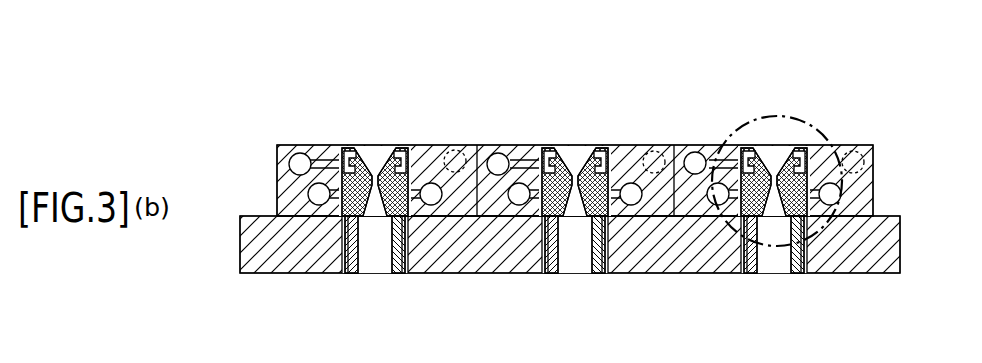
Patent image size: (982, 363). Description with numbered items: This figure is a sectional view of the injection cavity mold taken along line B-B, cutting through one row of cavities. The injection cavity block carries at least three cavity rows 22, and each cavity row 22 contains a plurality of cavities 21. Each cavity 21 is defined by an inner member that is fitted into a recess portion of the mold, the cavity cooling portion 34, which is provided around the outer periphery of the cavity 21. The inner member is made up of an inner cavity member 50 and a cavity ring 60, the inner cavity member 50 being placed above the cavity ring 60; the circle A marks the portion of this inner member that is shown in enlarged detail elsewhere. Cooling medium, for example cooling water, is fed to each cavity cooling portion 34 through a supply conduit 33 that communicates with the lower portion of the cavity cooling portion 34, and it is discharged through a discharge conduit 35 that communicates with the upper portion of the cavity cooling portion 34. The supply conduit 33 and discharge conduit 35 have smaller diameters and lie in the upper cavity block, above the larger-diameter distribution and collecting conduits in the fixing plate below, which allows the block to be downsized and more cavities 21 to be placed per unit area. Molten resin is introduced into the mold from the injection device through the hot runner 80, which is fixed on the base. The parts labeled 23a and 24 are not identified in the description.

The cavity 21 is at (376, 163).
The cavity row 22 is at (424, 150).
The support substrate 23a is at (367, 274).
The flow path forming member 24 is at (279, 145).
The supply conduit 33 is at (319, 206).
The cavity cooling portion 34 is at (343, 147).
The discharge conduit 35 is at (300, 153).
The inner cavity member 50 is at (357, 146).
The cavity ring 60 is at (390, 260).
The hot runner 80 is at (750, 273).
The circle A is at (785, 74).